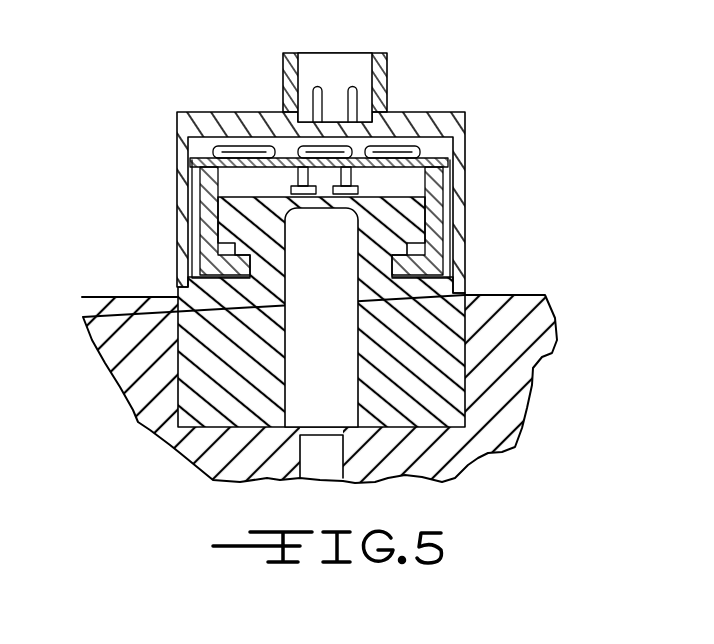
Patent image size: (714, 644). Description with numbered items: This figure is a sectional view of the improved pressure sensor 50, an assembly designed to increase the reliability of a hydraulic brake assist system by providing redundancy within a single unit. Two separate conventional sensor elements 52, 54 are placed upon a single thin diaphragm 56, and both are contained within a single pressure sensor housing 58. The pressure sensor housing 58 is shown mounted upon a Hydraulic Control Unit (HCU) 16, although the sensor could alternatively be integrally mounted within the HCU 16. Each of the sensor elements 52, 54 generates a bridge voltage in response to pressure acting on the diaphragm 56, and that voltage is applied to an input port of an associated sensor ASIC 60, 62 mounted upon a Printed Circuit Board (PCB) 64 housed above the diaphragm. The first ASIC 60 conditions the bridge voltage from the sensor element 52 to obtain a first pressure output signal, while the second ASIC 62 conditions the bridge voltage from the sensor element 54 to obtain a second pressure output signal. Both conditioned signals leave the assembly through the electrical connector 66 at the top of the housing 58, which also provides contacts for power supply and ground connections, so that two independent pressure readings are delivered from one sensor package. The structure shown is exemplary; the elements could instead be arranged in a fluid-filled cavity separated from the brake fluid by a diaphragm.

The Hydraulic Control Unit (HCU) 16 is at (540, 358).
The pressure sensor 50 is at (323, 227).
The sensor element 52 is at (291, 188).
The sensor element 54 is at (358, 189).
The thin diaphragm 56 is at (315, 207).
The pressure sensor housing 58 is at (507, 166).
The sensor ASIC 60 is at (248, 144).
The sensor ASIC 62 is at (397, 145).
The Printed Circuit Board (PCB) 64 is at (190, 158).
The electrical connector 66 is at (384, 54).